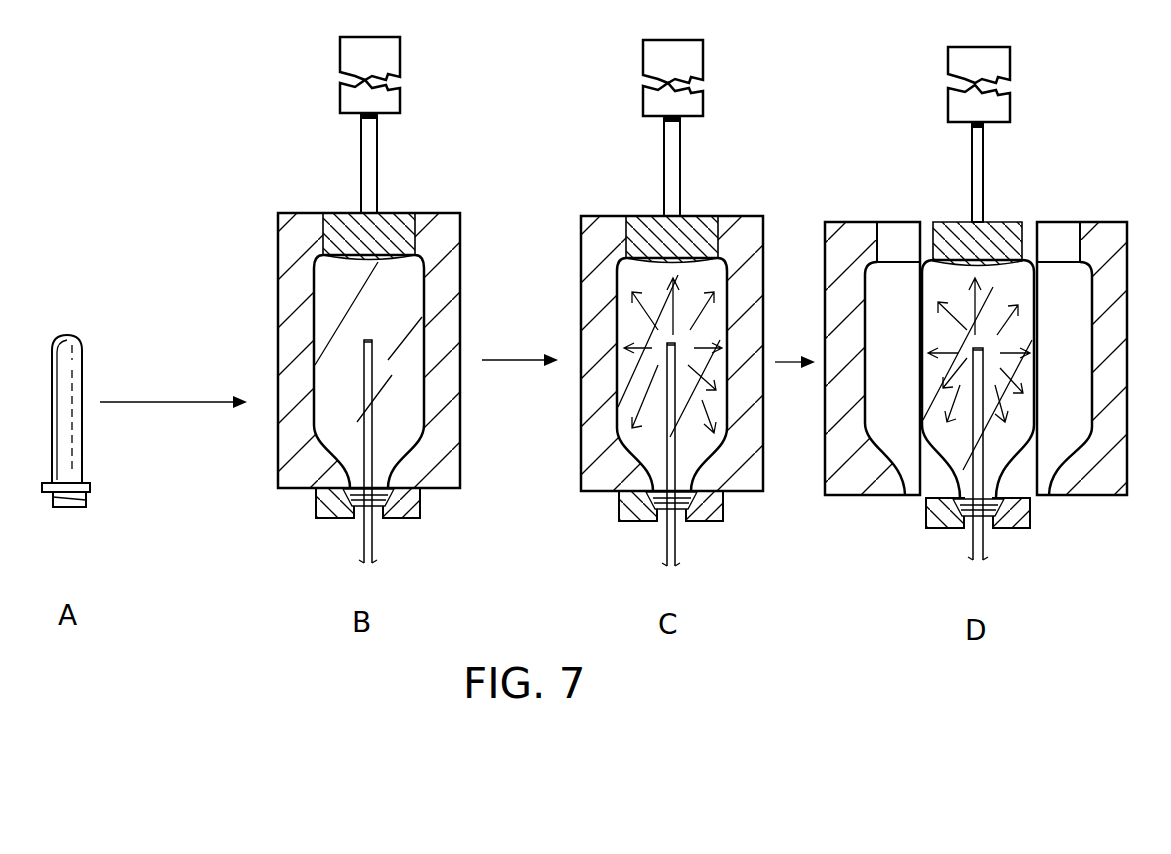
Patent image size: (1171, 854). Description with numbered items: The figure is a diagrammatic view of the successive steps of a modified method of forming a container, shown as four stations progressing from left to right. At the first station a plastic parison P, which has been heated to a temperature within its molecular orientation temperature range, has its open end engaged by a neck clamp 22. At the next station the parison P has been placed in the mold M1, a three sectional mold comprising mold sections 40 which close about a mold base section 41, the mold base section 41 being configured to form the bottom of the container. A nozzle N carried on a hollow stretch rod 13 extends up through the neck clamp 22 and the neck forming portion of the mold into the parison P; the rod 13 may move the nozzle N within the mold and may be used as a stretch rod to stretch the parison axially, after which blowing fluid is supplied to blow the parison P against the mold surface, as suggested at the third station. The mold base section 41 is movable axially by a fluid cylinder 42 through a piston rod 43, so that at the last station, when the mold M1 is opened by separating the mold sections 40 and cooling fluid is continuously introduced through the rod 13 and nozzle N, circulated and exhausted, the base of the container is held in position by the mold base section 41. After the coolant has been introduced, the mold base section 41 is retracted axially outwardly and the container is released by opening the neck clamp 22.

The plastic parison P is at (84, 347).
The mold sections 40 is at (278, 476).
The mold base section 41 is at (340, 232).
The fluid cylinder 42 is at (400, 95).
The piston rod 43 is at (378, 144).
The mold M1 is at (418, 200).
The neck clamp 22 is at (314, 519).
The hollow stretch rod 13 is at (701, 438).
The nozzle N is at (372, 336).